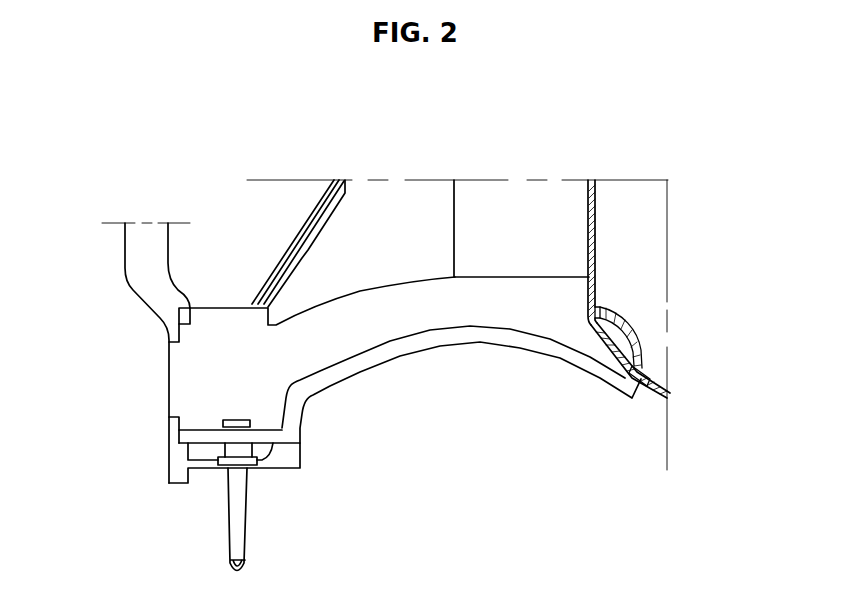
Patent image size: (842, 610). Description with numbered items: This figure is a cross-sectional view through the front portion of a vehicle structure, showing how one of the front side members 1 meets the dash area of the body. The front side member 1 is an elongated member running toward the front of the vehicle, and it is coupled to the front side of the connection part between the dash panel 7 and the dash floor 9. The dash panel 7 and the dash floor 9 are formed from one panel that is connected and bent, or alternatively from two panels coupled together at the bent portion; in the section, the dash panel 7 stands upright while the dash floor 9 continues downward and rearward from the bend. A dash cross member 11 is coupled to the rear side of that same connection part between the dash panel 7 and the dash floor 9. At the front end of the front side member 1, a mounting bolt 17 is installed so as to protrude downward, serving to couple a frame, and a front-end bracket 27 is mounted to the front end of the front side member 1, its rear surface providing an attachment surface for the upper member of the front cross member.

The front side member 1 is at (440, 340).
The dash panel 7 is at (595, 222).
The dash floor 9 is at (665, 388).
The dash cross member 11 is at (632, 333).
The mounting bolt 17 is at (242, 537).
The front-end bracket 27 is at (133, 258).